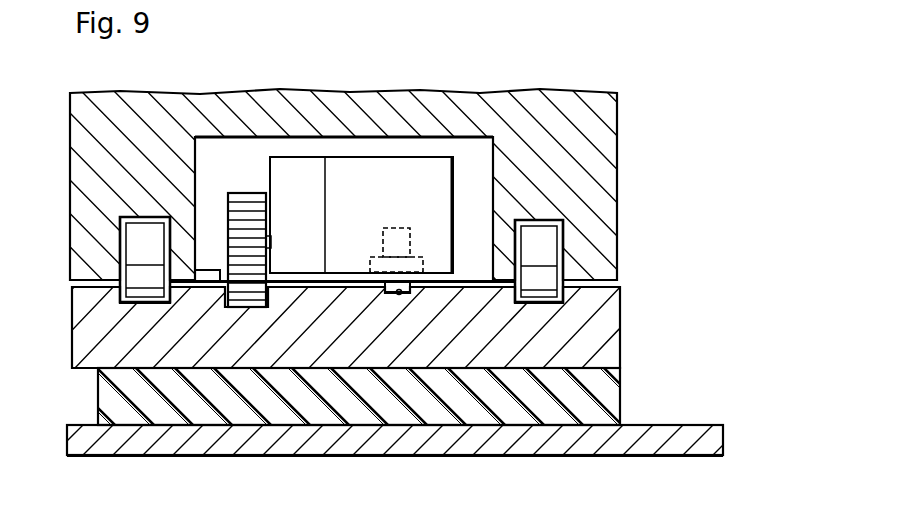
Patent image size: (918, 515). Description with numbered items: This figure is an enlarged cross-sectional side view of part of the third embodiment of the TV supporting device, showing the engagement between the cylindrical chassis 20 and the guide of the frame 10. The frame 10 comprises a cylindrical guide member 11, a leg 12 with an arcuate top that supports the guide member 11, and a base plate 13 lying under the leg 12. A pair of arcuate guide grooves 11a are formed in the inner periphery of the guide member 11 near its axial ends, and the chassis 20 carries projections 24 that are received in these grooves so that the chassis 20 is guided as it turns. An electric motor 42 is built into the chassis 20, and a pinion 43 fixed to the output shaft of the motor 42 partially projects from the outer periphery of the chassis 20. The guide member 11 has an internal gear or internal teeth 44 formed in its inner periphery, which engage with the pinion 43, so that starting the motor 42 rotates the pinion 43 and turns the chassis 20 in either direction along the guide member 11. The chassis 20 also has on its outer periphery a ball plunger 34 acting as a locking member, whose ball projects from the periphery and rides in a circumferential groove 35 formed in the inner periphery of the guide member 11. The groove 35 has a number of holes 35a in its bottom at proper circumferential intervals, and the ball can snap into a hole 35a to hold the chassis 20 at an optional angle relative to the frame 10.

The frame 10 is at (382, 459).
The guide member 11 is at (607, 318).
The arcuate guide grooves 11a is at (147, 303).
The leg 12 is at (612, 397).
The base plate 13 is at (550, 458).
The chassis 20 is at (622, 178).
The positioning pins 24 is at (147, 232).
The ball plunger 34 is at (394, 228).
The circumferential groove 35 is at (386, 292).
The holes 35a is at (401, 296).
The electric motor 42 is at (361, 166).
The pinion 43 is at (239, 202).
The internal teeth 44 is at (247, 310).